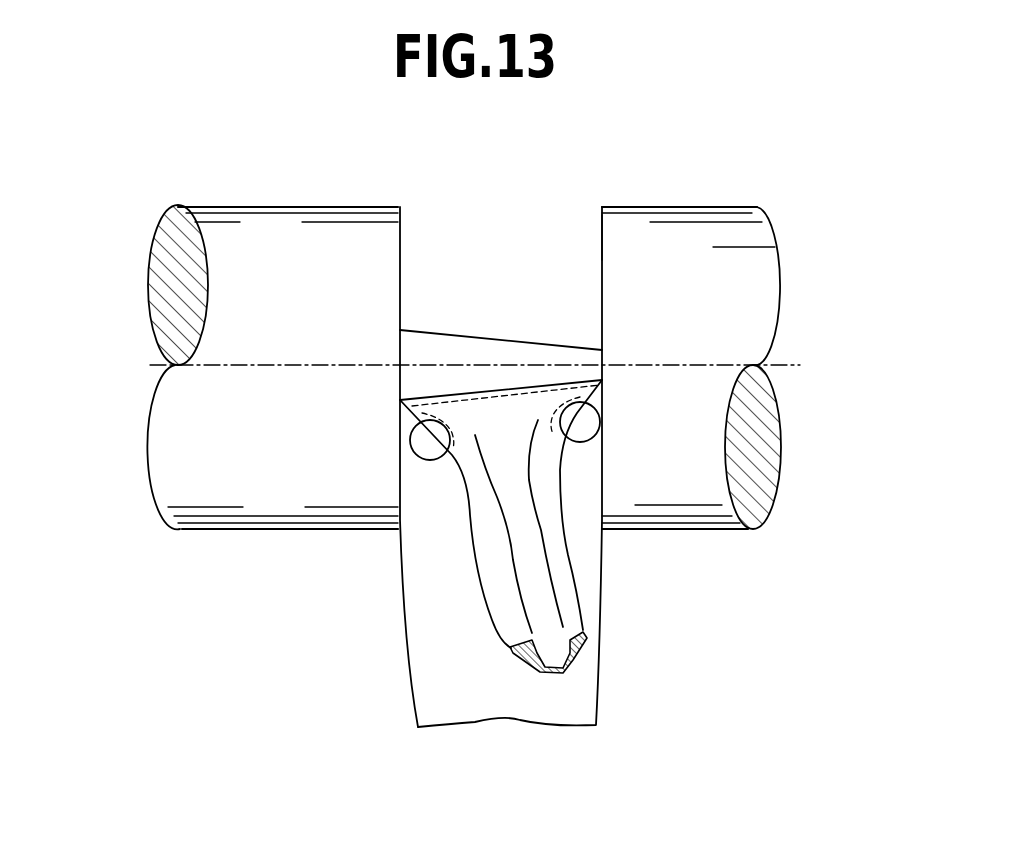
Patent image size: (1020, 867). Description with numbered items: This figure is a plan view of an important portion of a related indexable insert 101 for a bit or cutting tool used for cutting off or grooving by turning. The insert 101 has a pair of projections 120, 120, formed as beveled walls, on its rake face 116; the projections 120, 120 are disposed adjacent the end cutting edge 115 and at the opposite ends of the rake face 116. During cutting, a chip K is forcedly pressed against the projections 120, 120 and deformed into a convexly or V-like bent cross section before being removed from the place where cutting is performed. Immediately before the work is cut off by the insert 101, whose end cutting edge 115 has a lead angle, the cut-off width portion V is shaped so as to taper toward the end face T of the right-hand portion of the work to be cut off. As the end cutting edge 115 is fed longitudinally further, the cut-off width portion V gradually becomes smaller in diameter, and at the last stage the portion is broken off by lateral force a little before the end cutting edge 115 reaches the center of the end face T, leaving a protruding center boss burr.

The indexable insert 101 is at (402, 682).
The rake face 116 is at (442, 617).
The end cutting edge 115 is at (480, 391).
The projections 120 is at (410, 440).
The end face T is at (601, 228).
The cut-off width portion V is at (525, 342).
The chip K is at (570, 582).